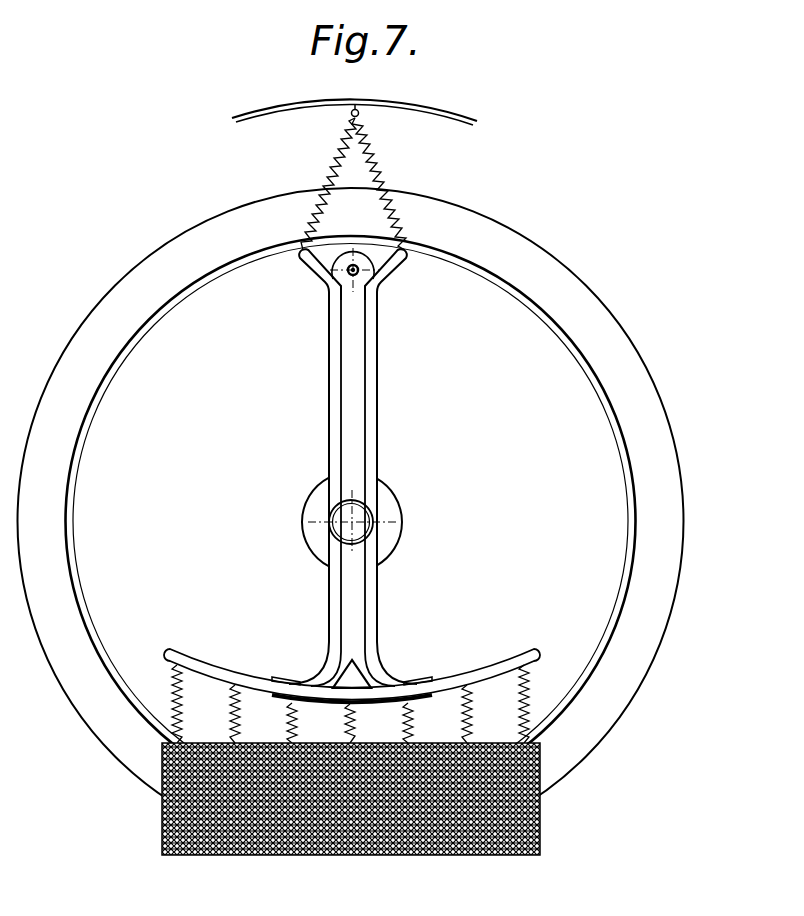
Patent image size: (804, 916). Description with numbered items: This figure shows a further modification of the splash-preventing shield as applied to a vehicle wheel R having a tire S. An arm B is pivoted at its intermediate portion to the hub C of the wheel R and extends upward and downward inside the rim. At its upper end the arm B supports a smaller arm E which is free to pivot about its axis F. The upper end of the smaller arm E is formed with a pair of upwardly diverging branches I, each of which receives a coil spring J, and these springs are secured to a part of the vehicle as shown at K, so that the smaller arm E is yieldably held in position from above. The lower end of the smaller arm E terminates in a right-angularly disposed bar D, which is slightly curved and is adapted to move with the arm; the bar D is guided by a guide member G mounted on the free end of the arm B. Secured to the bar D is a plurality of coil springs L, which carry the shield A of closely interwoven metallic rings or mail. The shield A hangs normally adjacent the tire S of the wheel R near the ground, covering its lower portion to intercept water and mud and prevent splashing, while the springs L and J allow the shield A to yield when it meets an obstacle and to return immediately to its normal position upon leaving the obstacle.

The shield A is at (541, 808).
The arm B is at (372, 388).
The hub C is at (337, 527).
The bar D is at (465, 678).
The smaller arm E is at (356, 329).
The axis F is at (372, 272).
The guide member G is at (407, 680).
The upwardly diverging branches I is at (320, 262).
The coil spring J is at (345, 152).
The part of the vehicle K is at (354, 91).
The coil springs L is at (462, 717).
The vehicle wheel R is at (590, 419).
The tire S is at (630, 382).